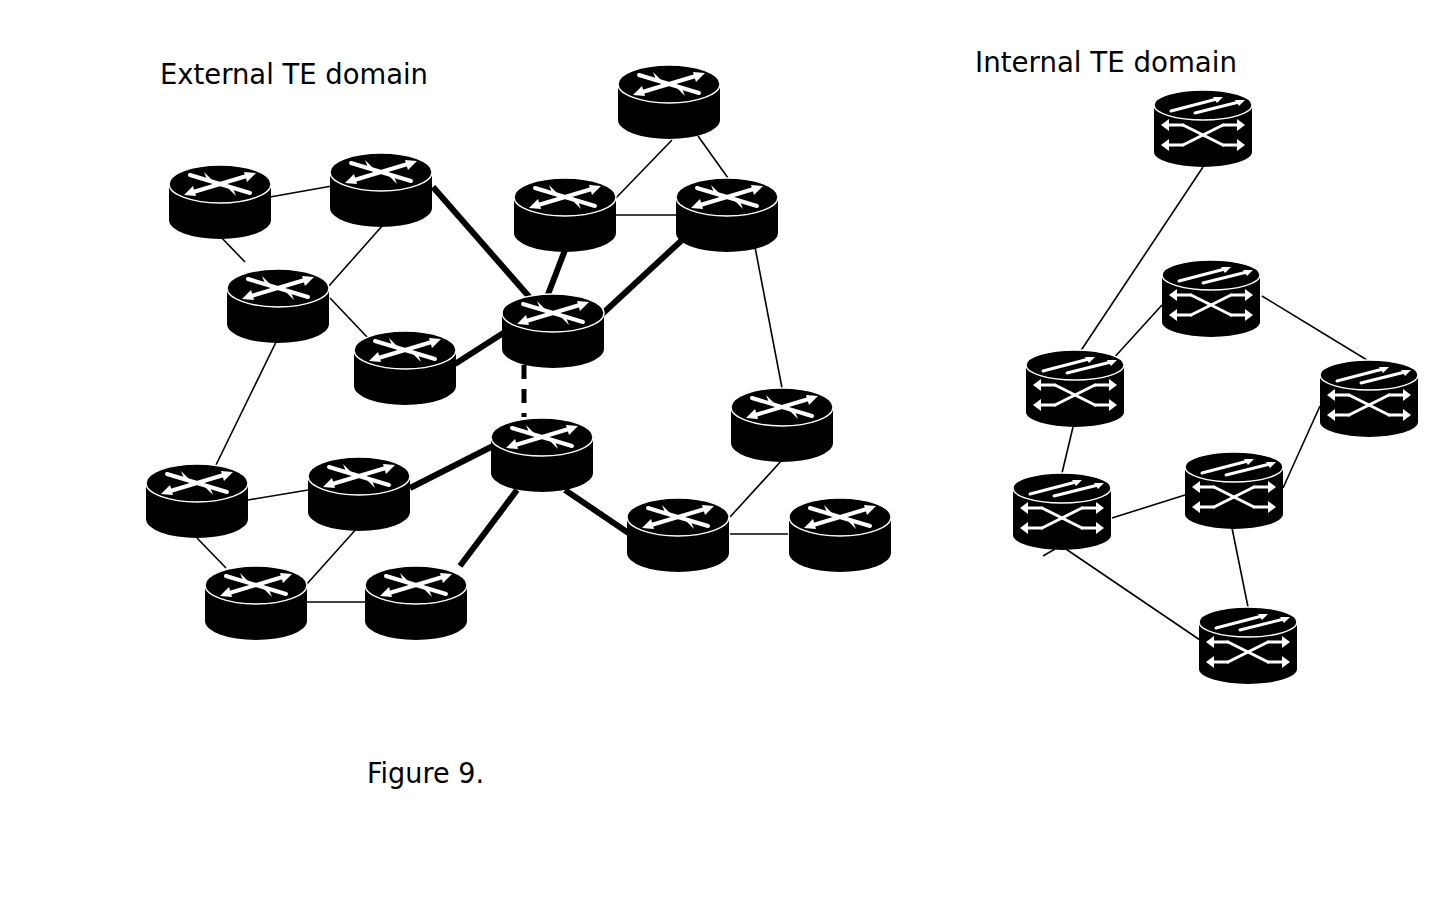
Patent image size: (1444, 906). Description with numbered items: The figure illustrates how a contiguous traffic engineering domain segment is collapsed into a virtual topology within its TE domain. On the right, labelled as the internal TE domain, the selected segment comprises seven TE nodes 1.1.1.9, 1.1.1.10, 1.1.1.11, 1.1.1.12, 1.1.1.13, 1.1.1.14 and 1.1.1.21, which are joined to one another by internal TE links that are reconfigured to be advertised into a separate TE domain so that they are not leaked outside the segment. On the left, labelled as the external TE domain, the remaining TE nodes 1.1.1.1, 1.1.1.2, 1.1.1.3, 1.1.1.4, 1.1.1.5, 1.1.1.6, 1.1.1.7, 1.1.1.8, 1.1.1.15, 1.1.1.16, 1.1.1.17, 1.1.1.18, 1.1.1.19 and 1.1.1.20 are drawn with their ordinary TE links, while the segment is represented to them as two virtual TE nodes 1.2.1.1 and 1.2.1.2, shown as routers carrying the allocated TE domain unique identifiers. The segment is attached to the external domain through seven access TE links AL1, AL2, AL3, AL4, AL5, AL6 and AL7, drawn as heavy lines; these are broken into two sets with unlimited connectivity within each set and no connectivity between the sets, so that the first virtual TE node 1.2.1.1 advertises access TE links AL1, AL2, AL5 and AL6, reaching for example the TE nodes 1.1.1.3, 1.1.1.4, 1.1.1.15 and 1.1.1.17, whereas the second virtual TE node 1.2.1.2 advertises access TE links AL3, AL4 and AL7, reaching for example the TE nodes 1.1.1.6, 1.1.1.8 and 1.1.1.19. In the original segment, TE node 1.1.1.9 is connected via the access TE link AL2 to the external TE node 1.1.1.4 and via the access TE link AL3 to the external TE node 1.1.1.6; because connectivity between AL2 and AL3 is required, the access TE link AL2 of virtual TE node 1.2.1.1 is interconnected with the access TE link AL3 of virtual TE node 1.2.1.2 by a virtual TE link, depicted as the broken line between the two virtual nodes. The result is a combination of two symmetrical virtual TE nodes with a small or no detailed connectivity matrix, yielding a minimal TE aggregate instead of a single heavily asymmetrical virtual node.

The TE node 1.1.1.1 is at (220, 183).
The TE node 1.1.1.2 is at (278, 293).
The TE node 1.1.1.3 is at (381, 170).
The TE node 1.1.1.4 is at (405, 357).
The TE node 1.1.1.5 is at (197, 483).
The TE node 1.1.1.6 is at (359, 480).
The TE node 1.1.1.7 is at (256, 592).
The TE node 1.1.1.8 is at (416, 592).
The TE node 1.1.1.15 is at (573, 202).
The TE node 1.1.1.16 is at (696, 91).
The TE node 1.1.1.17 is at (745, 207).
The TE node 1.1.1.18 is at (785, 413).
The TE node 1.1.1.19 is at (678, 524).
The TE node 1.1.1.20 is at (840, 524).
The virtual TE node 1.2.1.1 is at (588, 331).
The virtual TE node 1.2.1.2 is at (583, 455).
The access TE link AL1 is at (482, 241).
The access TE link AL2 is at (477, 335).
The access TE link AL3 is at (452, 447).
The access TE link AL4 is at (502, 528).
The access TE link AL5 is at (580, 273).
The access TE link AL6 is at (647, 278).
The access TE link AL7 is at (600, 511).
The TE node 1.1.1.9 is at (1074, 372).
The TE node 1.1.1.10 is at (1248, 128).
The TE node 1.1.1.11 is at (1211, 289).
The TE node 1.1.1.12 is at (1234, 480).
The TE node 1.1.1.13 is at (1263, 637).
The TE node 1.1.1.14 is at (1369, 383).
The TE node 1.1.1.21 is at (1076, 502).